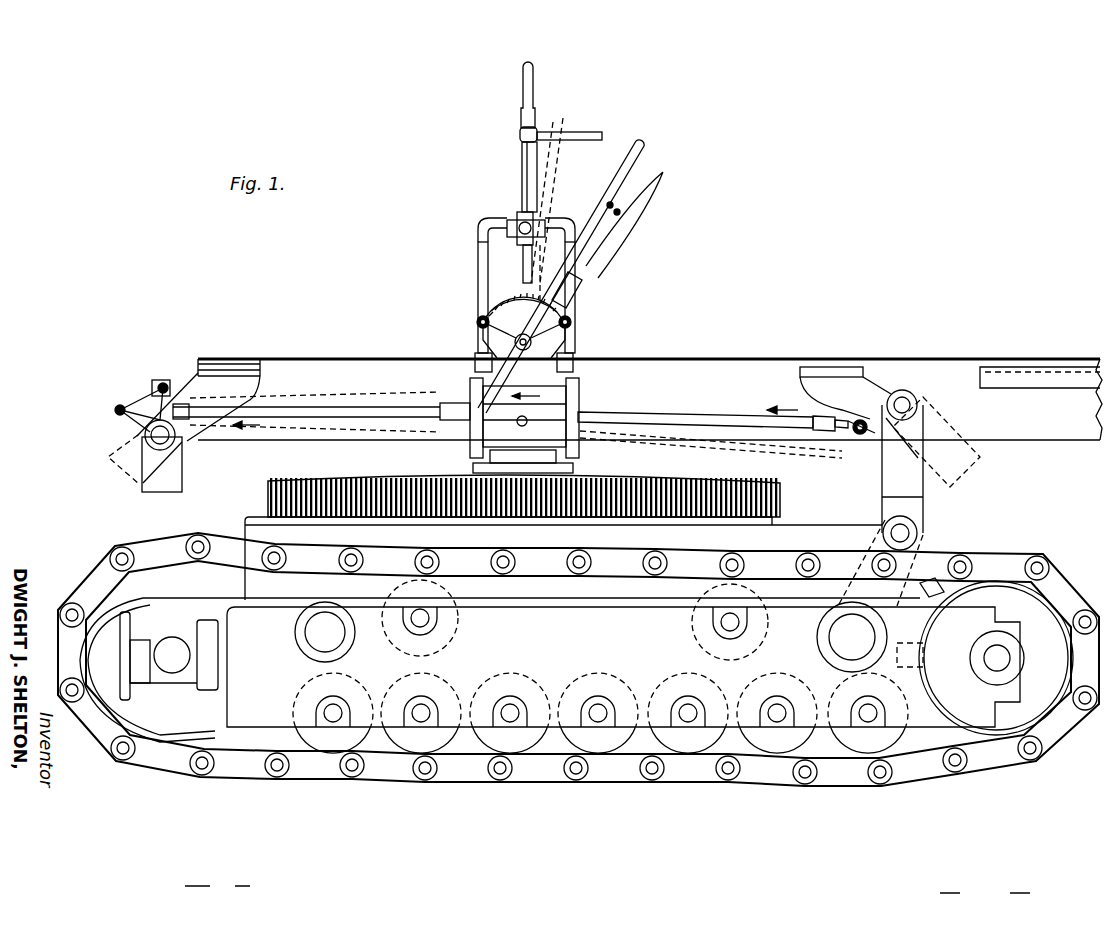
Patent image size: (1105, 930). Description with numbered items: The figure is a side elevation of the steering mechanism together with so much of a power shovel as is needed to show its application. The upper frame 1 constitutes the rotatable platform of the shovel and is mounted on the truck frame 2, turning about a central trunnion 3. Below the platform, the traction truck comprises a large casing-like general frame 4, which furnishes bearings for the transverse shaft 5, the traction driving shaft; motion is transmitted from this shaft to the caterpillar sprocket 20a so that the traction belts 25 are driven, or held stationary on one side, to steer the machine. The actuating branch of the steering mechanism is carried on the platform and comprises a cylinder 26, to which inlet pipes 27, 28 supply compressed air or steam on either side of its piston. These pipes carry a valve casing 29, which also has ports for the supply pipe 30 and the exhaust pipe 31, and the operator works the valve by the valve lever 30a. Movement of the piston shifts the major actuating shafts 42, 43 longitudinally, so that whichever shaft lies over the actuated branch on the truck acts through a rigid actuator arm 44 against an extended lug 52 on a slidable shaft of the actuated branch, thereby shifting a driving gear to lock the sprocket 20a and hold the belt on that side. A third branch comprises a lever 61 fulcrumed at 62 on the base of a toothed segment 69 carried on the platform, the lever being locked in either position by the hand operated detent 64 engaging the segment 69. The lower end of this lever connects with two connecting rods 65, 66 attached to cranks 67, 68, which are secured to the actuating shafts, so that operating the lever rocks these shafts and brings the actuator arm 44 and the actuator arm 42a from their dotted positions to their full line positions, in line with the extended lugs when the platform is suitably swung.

The upper frame 1 is at (330, 358).
The truck frame 2 is at (245, 521).
The central trunnion 3 is at (498, 453).
The general frame 4 is at (545, 612).
The transverse shaft 5 is at (984, 659).
The caterpillar sprocket 20a is at (937, 588).
The traction belts 25 is at (102, 575).
The cylinder 26 is at (580, 398).
The inlet pipe 27 is at (478, 268).
The inlet pipe 28 is at (578, 340).
The valve casing 29 is at (512, 221).
The supply pipe 30 is at (588, 132).
The valve lever 30a is at (531, 77).
The exhaust pipe 31 is at (523, 252).
The major actuating shaft 42 is at (145, 435).
The actuator arm 42a is at (172, 471).
The major actuating shaft 43 is at (905, 395).
The actuator arm 44 is at (905, 487).
The extended lug 52 is at (884, 511).
The lever 61 is at (646, 151).
The fulcrum 62 is at (515, 340).
The hand operated detent 64 is at (583, 289).
The connecting rod 65 is at (298, 420).
The connecting rod 66 is at (713, 397).
The crank 67 is at (149, 401).
The crank 68 is at (863, 419).
The sector gear 69 is at (478, 318).